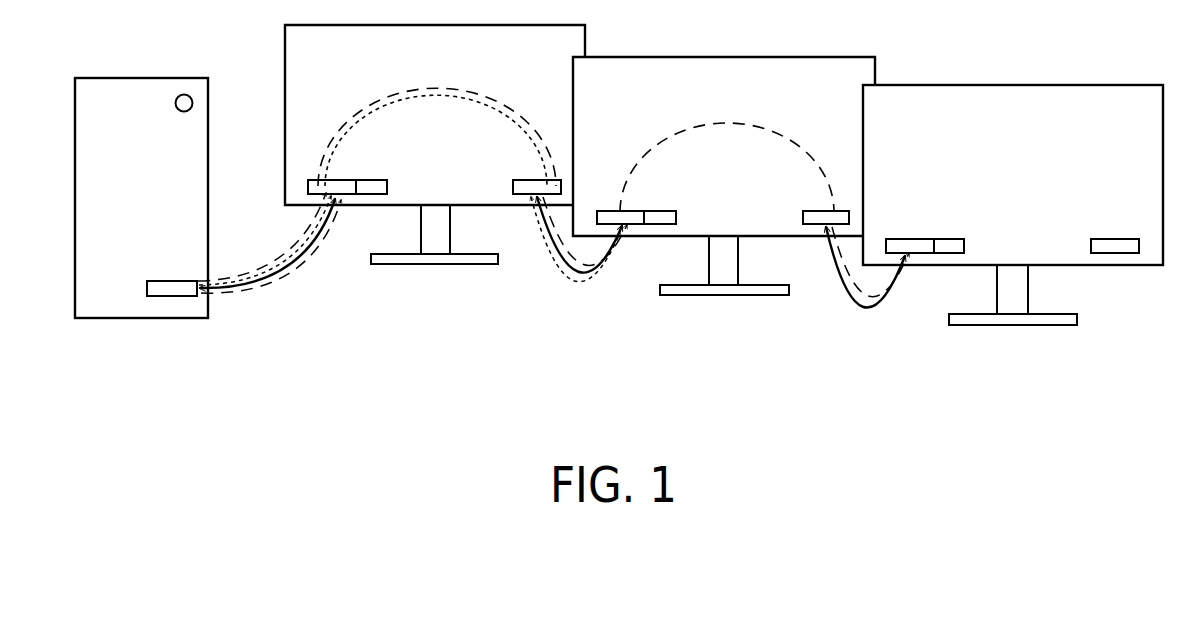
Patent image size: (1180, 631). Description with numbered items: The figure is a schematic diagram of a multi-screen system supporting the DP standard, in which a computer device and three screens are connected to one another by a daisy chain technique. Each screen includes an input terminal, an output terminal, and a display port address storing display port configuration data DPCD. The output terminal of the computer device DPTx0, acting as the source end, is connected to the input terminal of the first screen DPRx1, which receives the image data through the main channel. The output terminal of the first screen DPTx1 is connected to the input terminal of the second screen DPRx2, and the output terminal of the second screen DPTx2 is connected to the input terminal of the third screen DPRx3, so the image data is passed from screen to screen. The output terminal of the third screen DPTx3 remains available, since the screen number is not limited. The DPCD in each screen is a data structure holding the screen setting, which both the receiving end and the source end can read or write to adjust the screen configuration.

The output terminal of the computer device DPTx0 is at (153, 269).
The input terminal of the first screen DPRx1 is at (312, 178).
The output terminal of the first screen DPTx1 is at (557, 178).
The input terminal of the second screen DPRx2 is at (602, 209).
The output terminal of the second screen DPTx2 is at (845, 209).
The input terminal of the third screen DPRx3 is at (905, 226).
The output terminal of the third screen DPTx3 is at (1116, 226).
The display port configuration data DPCD is at (415, 156).